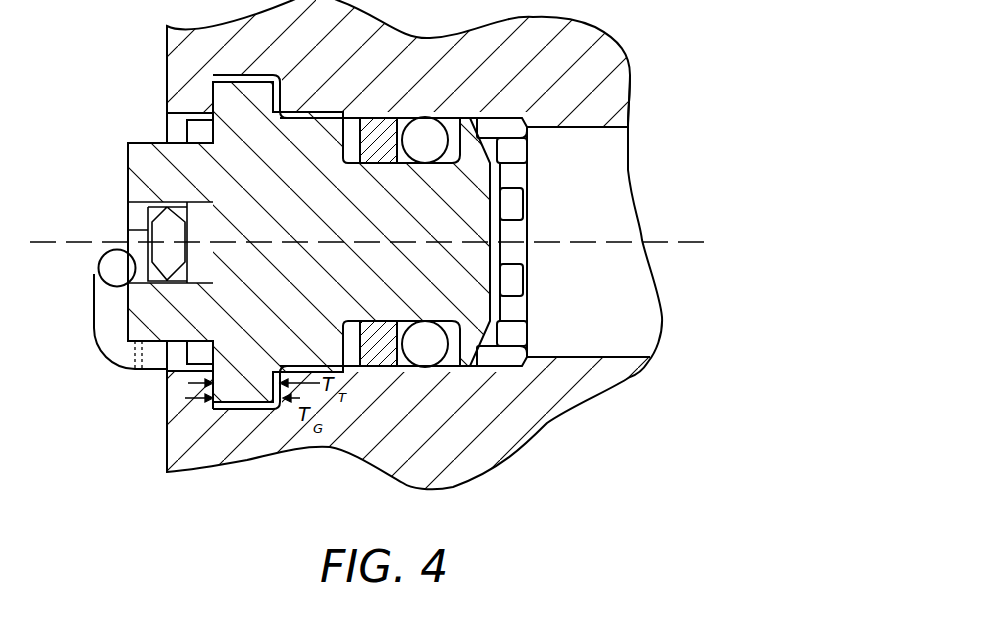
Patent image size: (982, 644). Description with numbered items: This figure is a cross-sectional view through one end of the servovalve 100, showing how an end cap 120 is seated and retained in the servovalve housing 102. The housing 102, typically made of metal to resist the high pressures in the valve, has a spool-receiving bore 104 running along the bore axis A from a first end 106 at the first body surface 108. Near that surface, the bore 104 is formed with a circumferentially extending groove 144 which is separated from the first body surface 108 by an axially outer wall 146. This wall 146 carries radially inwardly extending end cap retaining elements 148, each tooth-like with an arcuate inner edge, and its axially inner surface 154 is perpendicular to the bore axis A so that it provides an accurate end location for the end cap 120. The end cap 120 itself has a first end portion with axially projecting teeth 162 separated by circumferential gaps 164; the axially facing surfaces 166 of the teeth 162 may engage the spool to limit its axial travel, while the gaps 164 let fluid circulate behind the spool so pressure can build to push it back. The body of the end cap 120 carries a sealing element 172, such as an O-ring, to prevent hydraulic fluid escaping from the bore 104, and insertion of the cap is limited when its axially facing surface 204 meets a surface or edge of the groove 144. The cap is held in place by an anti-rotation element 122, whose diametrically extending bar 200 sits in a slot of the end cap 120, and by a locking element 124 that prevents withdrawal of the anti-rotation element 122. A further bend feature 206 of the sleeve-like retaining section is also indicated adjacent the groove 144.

The servovalve 100 is at (666, 56).
The servovalve housing 102 is at (187, 467).
The spool-receiving bore 104 is at (642, 312).
The first end 106 is at (163, 367).
The first body surface 108 is at (170, 450).
The end cap 120 is at (477, 207).
The anti-rotation element 122 is at (193, 133).
The locking element 124 is at (100, 310).
The circumferentially extending groove 144 is at (260, 413).
The axially outer wall 146 is at (177, 95).
The end cap retaining element 148 is at (177, 388).
The axially inner surface 154 is at (240, 413).
The axially projecting teeth 162 is at (517, 308).
The circumferential gaps 164 is at (517, 286).
The axially facing surfaces 166 is at (528, 257).
The sealing element 172 is at (420, 358).
The bar 200 is at (203, 222).
The axially facing surface 204 is at (281, 96).
The bend portion 206 is at (283, 101).
The axis A is at (698, 240).